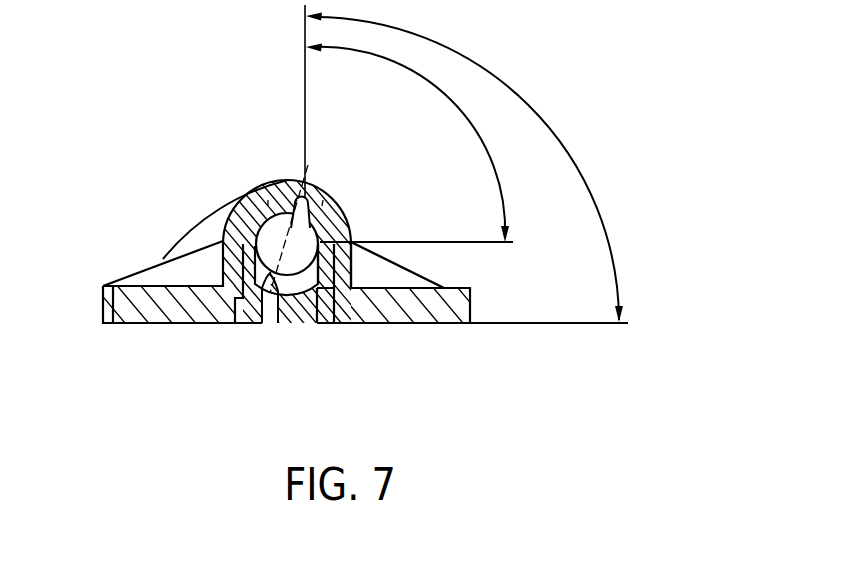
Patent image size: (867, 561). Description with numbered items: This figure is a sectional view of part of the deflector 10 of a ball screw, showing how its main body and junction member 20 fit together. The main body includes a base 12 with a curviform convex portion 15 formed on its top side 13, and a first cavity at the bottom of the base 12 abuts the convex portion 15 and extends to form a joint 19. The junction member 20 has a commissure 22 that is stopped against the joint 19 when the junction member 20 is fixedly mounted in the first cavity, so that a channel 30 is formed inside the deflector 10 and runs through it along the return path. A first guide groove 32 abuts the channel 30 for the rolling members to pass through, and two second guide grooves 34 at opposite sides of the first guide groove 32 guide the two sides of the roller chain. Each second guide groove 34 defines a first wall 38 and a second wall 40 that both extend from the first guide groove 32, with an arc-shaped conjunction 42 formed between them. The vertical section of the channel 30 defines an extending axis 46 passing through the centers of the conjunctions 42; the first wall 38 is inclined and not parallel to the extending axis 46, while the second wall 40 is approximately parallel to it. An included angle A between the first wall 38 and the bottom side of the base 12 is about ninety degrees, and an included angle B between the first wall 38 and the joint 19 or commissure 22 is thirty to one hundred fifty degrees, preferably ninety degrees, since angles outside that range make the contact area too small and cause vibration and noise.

The deflector 10 is at (352, 184).
The base 12 is at (473, 302).
The top side 13 is at (380, 287).
The curviform convex portion 15 is at (312, 212).
The joint 19 is at (182, 219).
The commissure 22 is at (223, 215).
The junction member 20 is at (243, 330).
The channel 30 is at (278, 227).
The first guide groove 32 is at (302, 296).
The second guide groove 34 is at (285, 42).
The first wall 38 is at (263, 300).
The second wall 40 is at (300, 290).
The arc-shaped conjunction 42 is at (281, 300).
The extending axis 46 is at (305, 240).
The included angle A is at (464, 168).
The included angle B is at (407, 143).